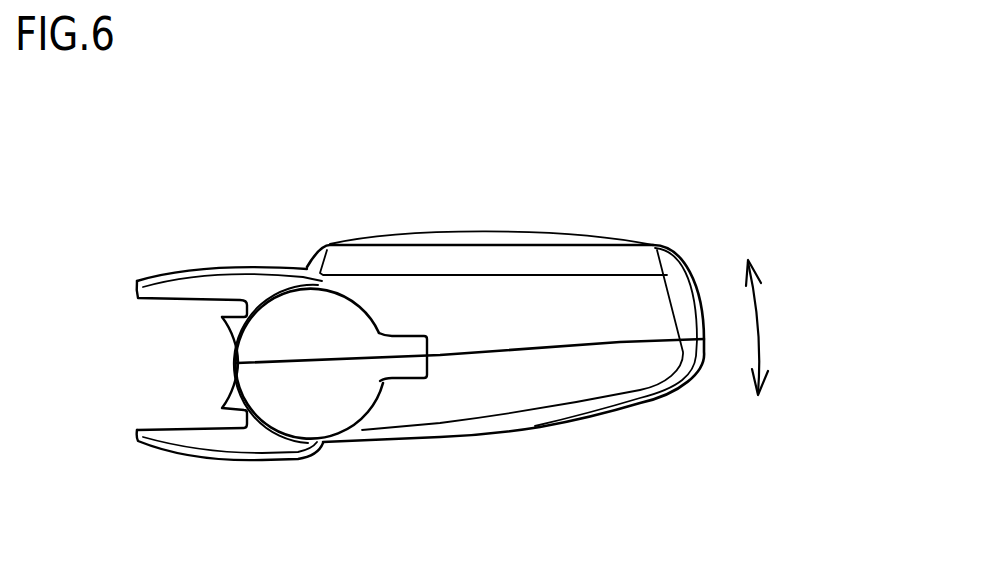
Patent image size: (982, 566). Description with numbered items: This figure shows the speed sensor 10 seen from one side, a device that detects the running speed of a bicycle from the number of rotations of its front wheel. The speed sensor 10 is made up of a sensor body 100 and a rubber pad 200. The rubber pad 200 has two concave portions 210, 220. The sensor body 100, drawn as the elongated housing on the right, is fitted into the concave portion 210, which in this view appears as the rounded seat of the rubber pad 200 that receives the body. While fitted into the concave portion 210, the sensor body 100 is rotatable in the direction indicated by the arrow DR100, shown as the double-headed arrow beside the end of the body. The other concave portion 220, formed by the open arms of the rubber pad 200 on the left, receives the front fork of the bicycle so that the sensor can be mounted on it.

The speed sensor 10 is at (177, 157).
The sensor body 100 is at (505, 307).
The rubber pad 200 is at (253, 442).
The concave portion 210 is at (281, 293).
The concave portion 220 is at (162, 297).
The arrow DR100 is at (758, 328).